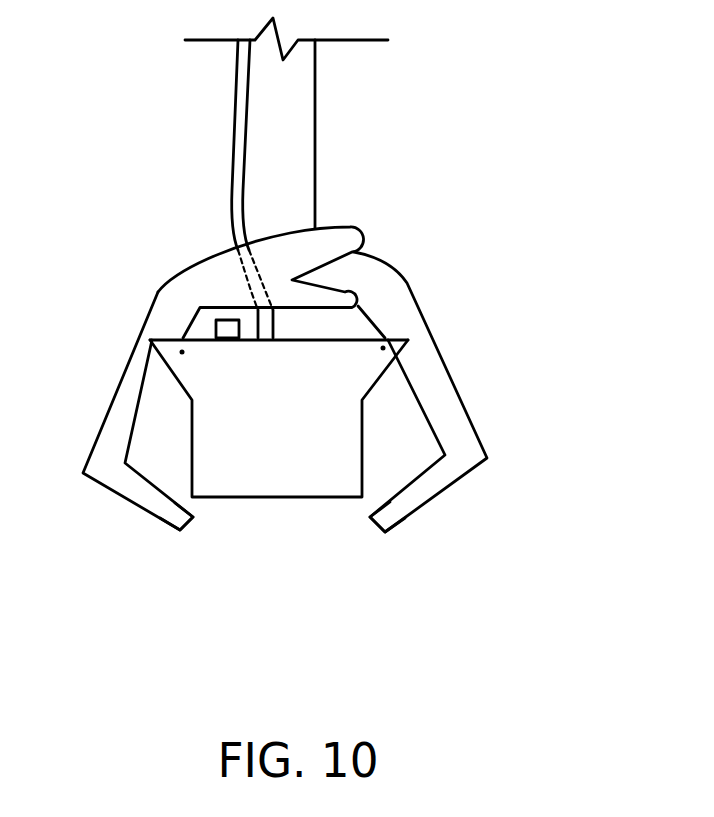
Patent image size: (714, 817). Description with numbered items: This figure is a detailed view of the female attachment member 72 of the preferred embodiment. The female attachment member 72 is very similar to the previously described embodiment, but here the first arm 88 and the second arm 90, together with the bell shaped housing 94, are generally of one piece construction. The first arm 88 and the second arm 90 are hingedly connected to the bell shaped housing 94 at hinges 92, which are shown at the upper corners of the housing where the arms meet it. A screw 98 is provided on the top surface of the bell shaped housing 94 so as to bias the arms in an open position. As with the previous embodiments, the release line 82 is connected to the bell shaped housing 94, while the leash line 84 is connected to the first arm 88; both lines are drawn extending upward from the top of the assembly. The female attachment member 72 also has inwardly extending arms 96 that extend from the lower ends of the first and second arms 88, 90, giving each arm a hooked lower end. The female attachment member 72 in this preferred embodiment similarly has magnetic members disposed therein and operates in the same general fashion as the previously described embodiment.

The female attachment member 72 is at (580, 304).
The release line 82 is at (232, 170).
The leash line 84 is at (315, 130).
The first arm 88 is at (128, 405).
The second arm 90 is at (462, 418).
The hinges 92 is at (182, 352).
The bell shaped housing 94 is at (278, 492).
The inwardly extending arms 96 is at (118, 497).
The screw 98 is at (233, 330).